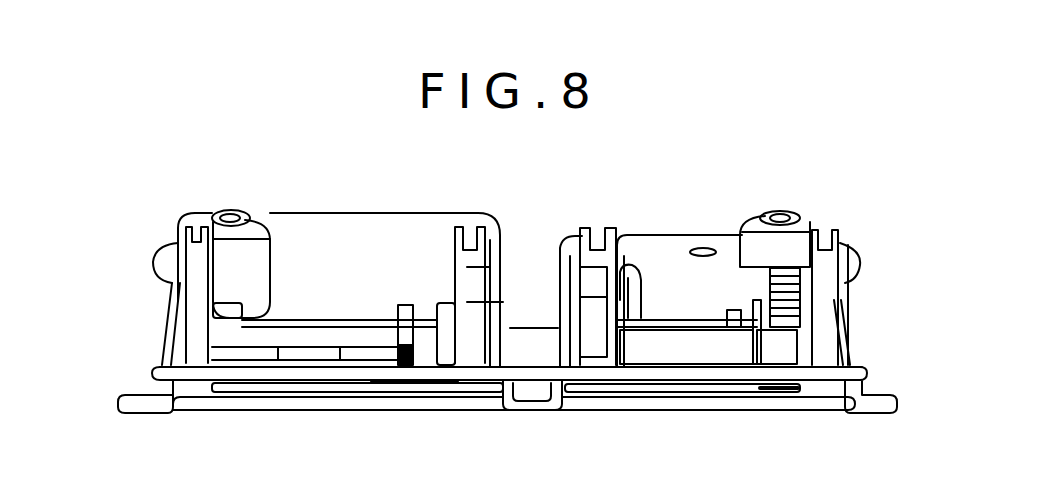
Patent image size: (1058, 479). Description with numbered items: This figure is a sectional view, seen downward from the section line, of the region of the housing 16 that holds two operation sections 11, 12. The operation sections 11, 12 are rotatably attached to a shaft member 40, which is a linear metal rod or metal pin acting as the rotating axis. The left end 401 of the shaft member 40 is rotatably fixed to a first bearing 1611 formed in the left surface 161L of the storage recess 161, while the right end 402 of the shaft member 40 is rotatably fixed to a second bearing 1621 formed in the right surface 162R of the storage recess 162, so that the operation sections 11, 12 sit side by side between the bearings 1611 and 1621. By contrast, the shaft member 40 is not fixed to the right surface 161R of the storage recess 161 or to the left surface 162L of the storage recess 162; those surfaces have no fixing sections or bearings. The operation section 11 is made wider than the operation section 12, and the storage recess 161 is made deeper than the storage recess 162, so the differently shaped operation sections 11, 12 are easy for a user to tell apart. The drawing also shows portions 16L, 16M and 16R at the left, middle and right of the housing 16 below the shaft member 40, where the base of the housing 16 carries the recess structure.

The housing 16 is at (310, 214).
The storage recess 161 is at (327, 213).
The storage recess 162 is at (660, 232).
The left surface of storage recess 161L is at (167, 323).
The right surface of storage recess 161R is at (533, 333).
The left surface of storage recess 162L is at (557, 353).
The right surface of storage recess 162R is at (848, 340).
The first bearing 1611 is at (155, 352).
The second bearing 1621 is at (855, 364).
The left end of shaft member 401 is at (155, 367).
The right end of shaft member 402 is at (866, 373).
The shaft member 40 is at (335, 375).
The operation section 11 is at (260, 408).
The operation section 12 is at (657, 397).
The left foot 16L is at (150, 416).
The middle foot 16M is at (530, 413).
The right foot 16R is at (862, 408).